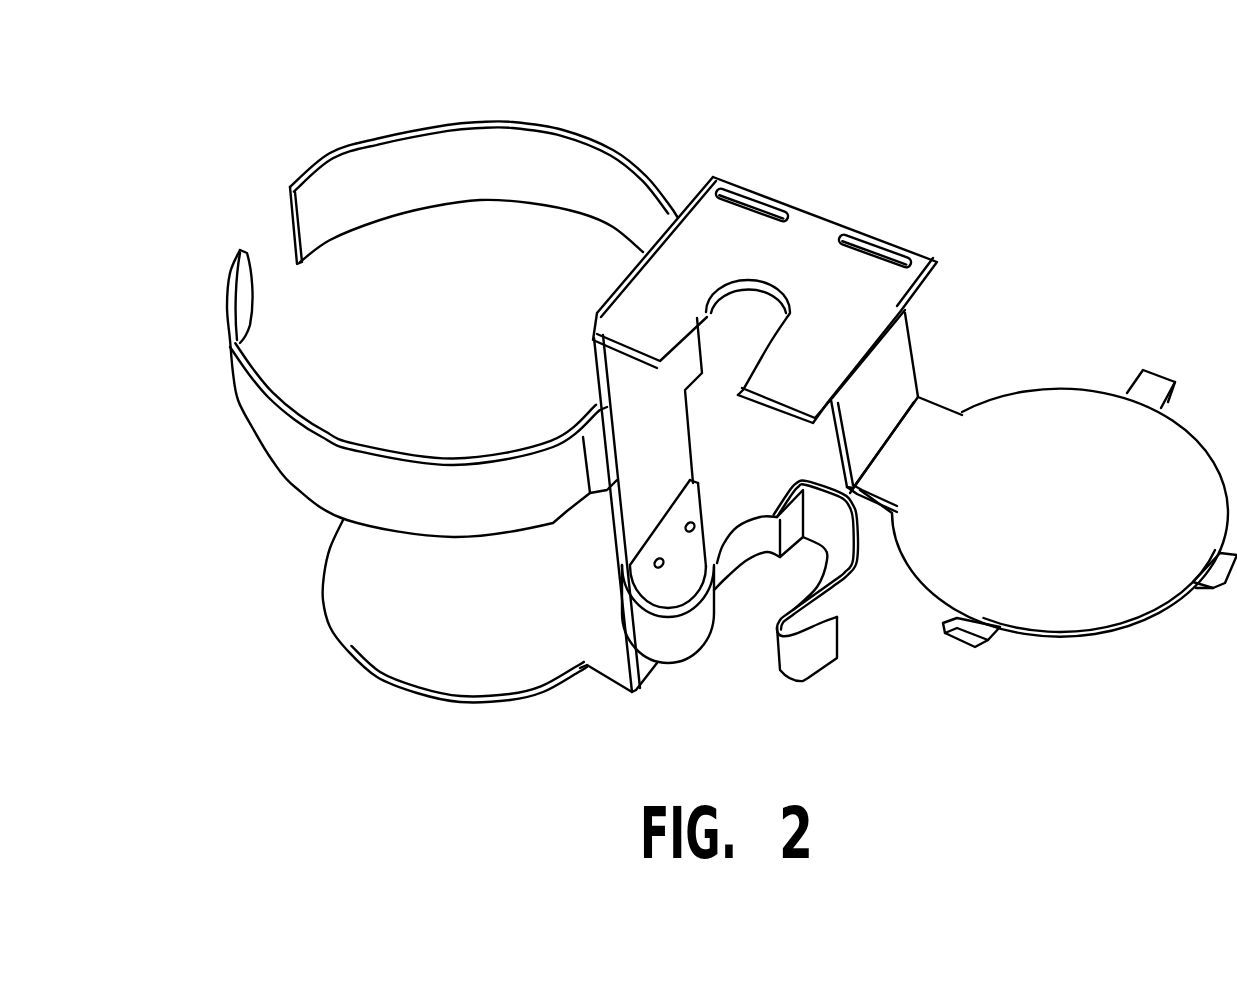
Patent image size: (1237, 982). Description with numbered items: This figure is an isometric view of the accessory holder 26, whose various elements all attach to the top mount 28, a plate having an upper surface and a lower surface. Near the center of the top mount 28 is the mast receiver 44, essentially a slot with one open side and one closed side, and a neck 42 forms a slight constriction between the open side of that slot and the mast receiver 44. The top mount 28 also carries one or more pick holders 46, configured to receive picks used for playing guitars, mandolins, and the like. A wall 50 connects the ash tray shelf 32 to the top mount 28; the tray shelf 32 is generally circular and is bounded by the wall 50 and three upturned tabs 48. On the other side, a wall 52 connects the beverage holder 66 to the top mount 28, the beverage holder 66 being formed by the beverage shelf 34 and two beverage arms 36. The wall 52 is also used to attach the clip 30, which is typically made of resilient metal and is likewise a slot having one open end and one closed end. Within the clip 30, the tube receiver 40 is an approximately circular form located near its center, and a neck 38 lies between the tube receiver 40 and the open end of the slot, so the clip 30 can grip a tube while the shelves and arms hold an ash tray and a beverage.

The accessory holder 26 is at (979, 738).
The top mount 28 is at (808, 224).
The clip 30 is at (640, 637).
The ash tray shelf 32 is at (1073, 410).
The beverage shelf 34 is at (413, 660).
The beverage arms 36 is at (406, 152).
The neck 38 is at (742, 637).
The tube receiver 40 is at (768, 573).
The neck 42 is at (733, 332).
The mast receiver 44 is at (752, 305).
The pick holders 46 is at (873, 246).
The upturned tabs 48 is at (980, 647).
The wall 50 is at (900, 385).
The wall 52 is at (618, 532).
The beverage holder 66 is at (433, 332).